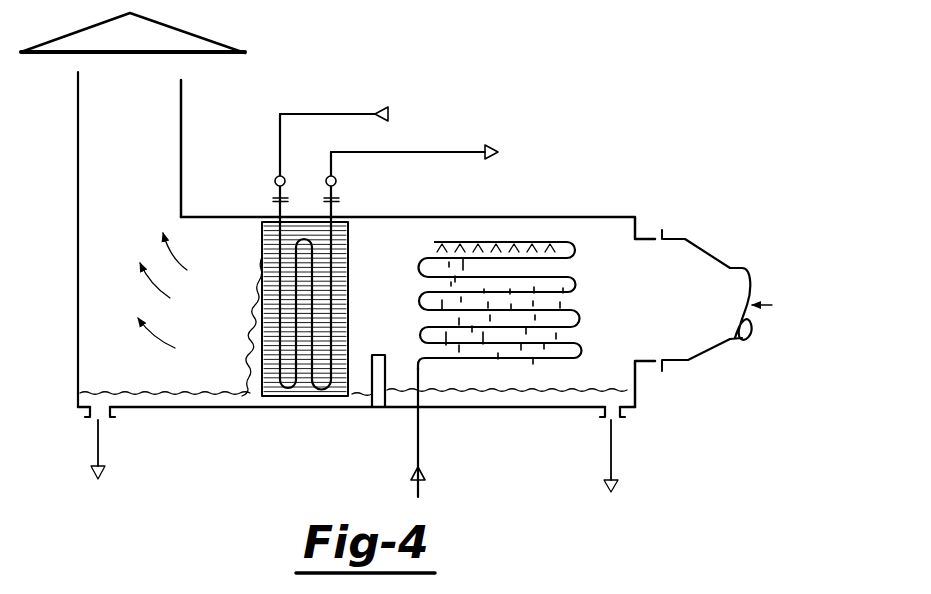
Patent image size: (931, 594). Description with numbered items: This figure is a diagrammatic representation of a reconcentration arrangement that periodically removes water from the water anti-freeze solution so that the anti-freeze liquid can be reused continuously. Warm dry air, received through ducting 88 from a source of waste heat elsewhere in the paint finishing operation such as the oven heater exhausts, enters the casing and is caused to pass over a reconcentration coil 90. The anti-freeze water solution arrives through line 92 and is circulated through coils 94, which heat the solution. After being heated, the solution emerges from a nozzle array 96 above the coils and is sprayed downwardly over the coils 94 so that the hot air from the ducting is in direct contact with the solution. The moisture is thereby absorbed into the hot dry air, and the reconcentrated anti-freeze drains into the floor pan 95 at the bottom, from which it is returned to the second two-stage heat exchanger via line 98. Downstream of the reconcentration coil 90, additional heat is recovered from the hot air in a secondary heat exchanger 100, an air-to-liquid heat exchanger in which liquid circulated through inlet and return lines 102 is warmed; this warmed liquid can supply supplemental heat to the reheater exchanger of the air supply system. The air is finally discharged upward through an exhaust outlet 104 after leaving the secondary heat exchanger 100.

The ducting 88 is at (692, 258).
The reconcentration coil 90 is at (576, 240).
The line 92 is at (416, 438).
The coils 94 is at (580, 279).
The floor pan 95 is at (624, 400).
The nozzle array 96 is at (505, 241).
The line 98 is at (609, 447).
The secondary heat exchanger 100 is at (268, 216).
The inlet and return lines 102 is at (373, 115).
The exhaust outlet 104 is at (130, 130).